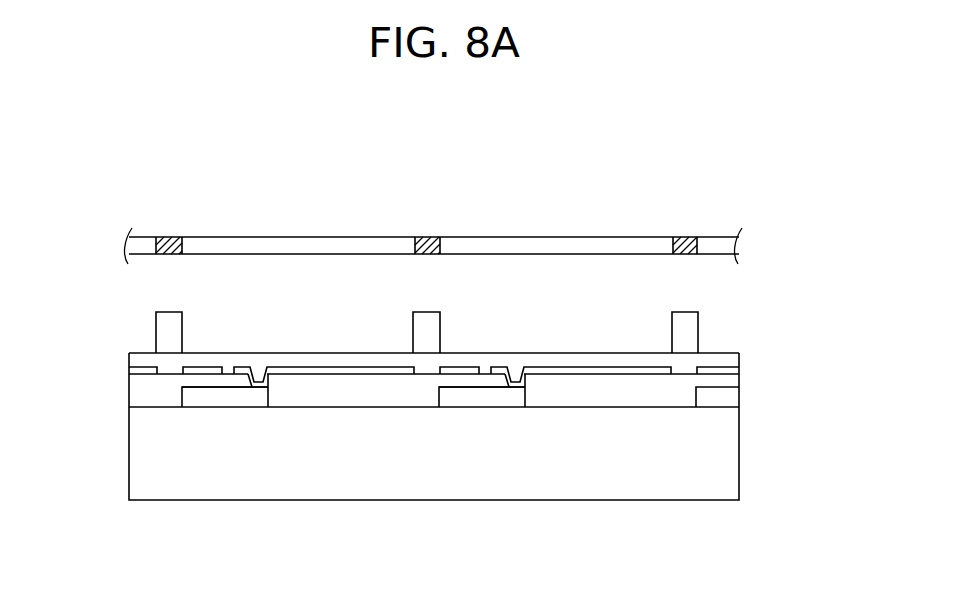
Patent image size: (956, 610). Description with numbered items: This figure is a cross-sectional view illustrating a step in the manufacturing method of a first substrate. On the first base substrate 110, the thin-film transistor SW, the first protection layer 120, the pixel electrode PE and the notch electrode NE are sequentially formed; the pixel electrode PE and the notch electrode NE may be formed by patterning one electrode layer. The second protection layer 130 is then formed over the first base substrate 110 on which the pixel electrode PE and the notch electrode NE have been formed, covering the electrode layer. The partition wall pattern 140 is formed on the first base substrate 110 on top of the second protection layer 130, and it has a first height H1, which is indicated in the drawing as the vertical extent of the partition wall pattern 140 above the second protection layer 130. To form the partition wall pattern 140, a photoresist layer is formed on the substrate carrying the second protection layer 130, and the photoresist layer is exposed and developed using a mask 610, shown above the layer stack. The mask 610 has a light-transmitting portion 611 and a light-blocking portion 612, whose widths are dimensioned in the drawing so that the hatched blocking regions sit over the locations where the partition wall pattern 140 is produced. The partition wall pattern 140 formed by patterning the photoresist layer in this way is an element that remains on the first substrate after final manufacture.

The first base substrate 110 is at (135, 449).
The first protection layer 120 is at (133, 394).
The second protection layer 130 is at (133, 362).
The partition wall pattern 140 is at (167, 327).
The mask 610 is at (737, 208).
The light-transmitting portion 611 is at (673, 211).
The light-blocking portion 612 is at (415, 211).
The first height H1 is at (182, 312).
The notch electrode NE is at (195, 374).
The pixel electrode PE is at (292, 374).
The thin-film transistor SW is at (233, 395).